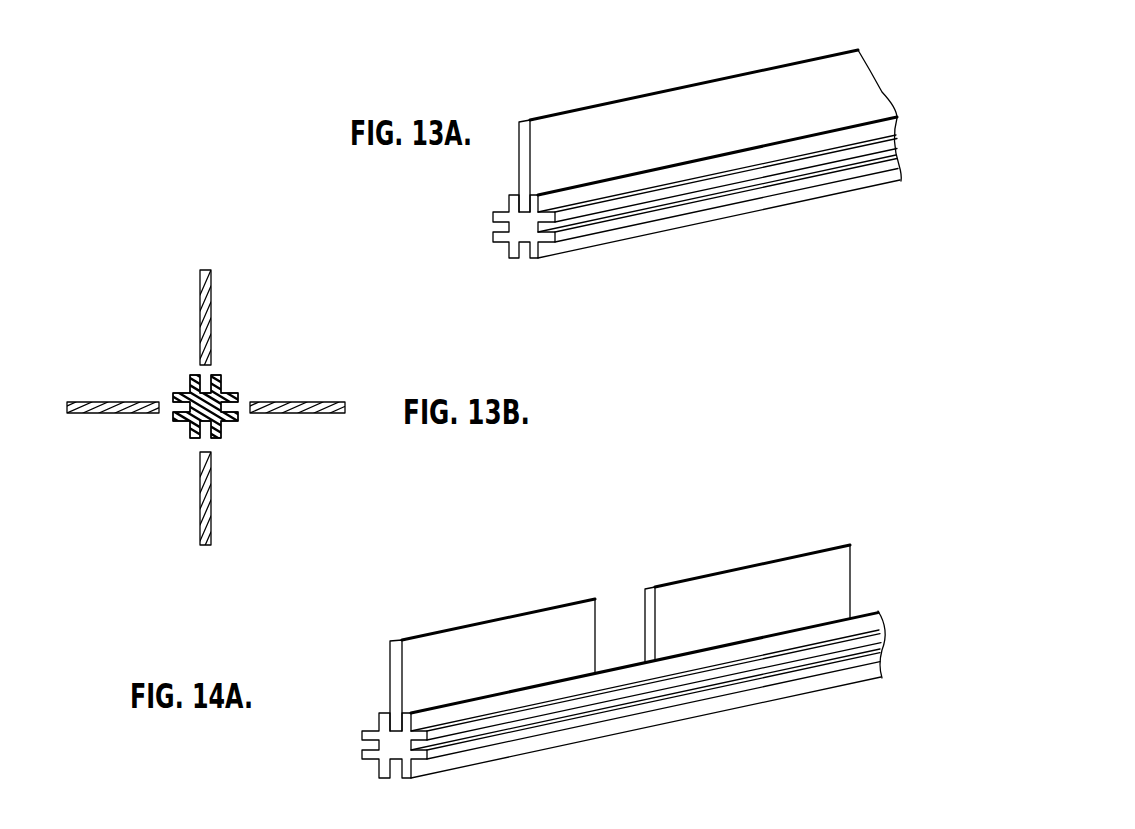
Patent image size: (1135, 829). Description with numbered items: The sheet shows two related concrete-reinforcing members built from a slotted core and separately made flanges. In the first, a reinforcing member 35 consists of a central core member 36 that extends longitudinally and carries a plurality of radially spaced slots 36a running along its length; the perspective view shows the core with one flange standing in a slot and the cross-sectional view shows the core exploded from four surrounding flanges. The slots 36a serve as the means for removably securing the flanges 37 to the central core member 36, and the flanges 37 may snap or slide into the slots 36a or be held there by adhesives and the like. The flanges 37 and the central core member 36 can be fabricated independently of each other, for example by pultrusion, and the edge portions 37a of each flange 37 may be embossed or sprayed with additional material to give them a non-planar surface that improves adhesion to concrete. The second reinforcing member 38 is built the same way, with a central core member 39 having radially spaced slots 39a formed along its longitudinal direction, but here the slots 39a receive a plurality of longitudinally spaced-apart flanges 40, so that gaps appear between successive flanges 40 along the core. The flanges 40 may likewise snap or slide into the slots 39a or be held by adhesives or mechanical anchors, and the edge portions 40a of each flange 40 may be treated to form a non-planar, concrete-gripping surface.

In FIG. 13A, the reinforcing member 35 is at (908, 86).
In FIG. 13B, the reinforcing member 35 is at (285, 366).
In FIG. 13A, the central core member 36 is at (527, 228).
In FIG. 13B, the central core member 36 is at (220, 387).
In FIG. 13A, the radially spaced slots 36a is at (522, 192).
In FIG. 13B, the radially spaced slots 36a is at (180, 406).
In FIG. 13A, the flanges 37 is at (608, 103).
In FIG. 13B, the flanges 37 is at (212, 295).
In FIG. 13A, the edge portions 37a is at (763, 95).
In FIG. 14A, the reinforcing member 38 is at (866, 563).
In FIG. 14A, the central core member 39 is at (395, 750).
In FIG. 14A, the radially spaced slots 39a is at (392, 718).
In FIG. 14A, the longitudinally spaced-apart flanges 40 is at (497, 618).
In FIG. 14A, the edge portions 40a is at (574, 625).